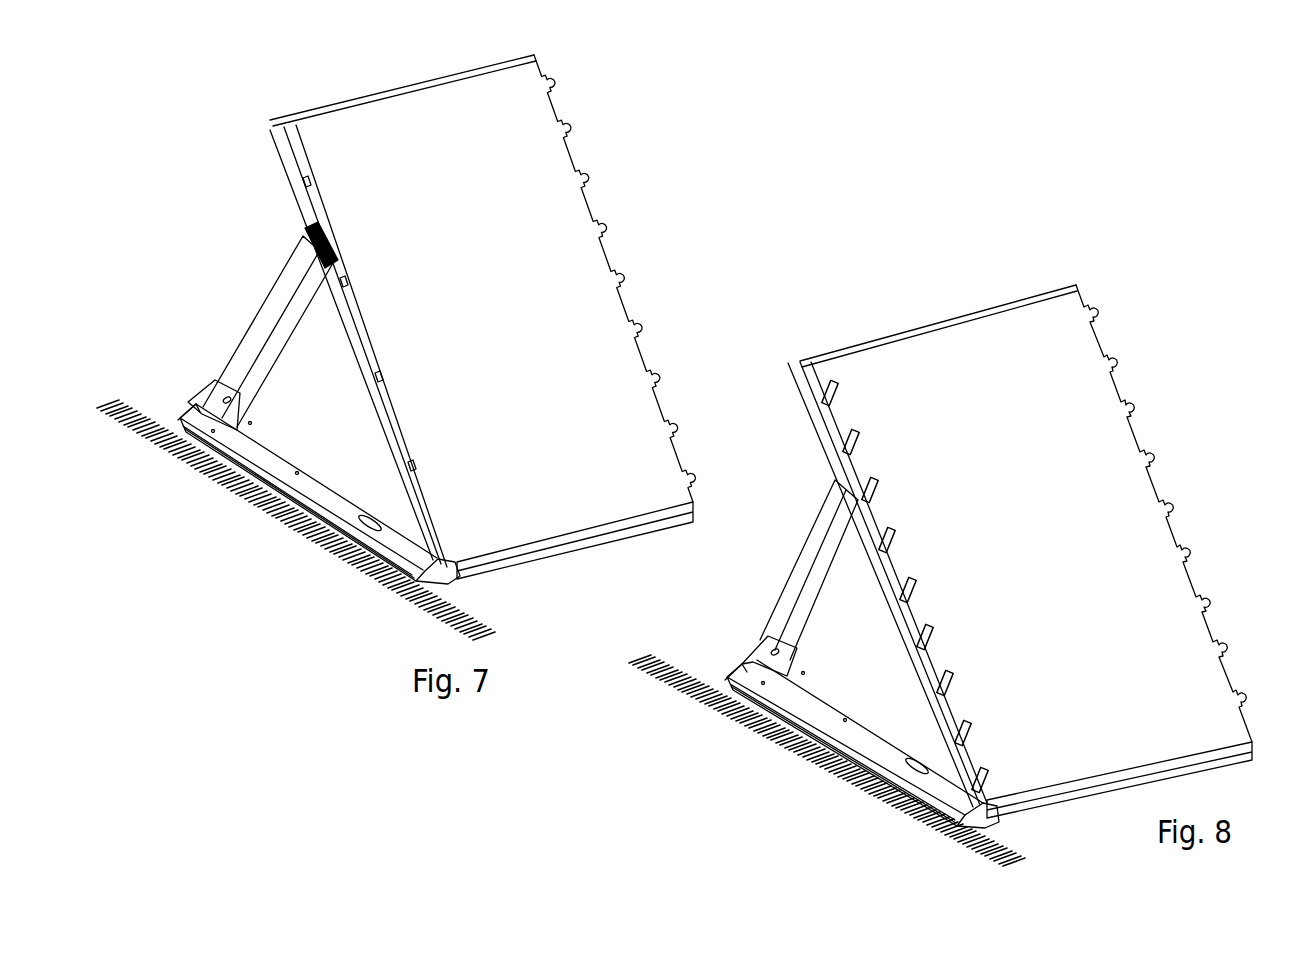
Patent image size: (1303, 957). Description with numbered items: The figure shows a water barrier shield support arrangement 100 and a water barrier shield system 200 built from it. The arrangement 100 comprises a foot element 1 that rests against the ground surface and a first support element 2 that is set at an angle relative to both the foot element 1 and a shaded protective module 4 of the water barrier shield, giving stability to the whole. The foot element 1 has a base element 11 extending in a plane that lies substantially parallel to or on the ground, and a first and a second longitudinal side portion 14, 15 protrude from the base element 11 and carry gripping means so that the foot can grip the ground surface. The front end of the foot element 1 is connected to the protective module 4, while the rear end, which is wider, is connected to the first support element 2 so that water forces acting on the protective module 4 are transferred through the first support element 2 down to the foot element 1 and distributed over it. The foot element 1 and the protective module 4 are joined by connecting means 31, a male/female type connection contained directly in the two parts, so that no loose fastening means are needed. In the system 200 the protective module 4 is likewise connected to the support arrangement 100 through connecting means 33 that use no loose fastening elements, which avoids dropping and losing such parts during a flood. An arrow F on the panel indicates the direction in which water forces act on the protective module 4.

In FIG. 7, the water barrier shield support arrangement 100 is at (221, 166).
In FIG. 8, the water barrier shield system 200 is at (1135, 266).
In FIG. 7, the foot element 1 is at (272, 458).
In FIG. 8, the foot element 1 is at (733, 662).
In FIG. 7, the first support element 2 is at (282, 279).
In FIG. 8, the first support element 2 is at (830, 487).
In FIG. 7, the protective module 4 is at (483, 317).
In FIG. 8, the protective module 4 is at (1110, 433).
In FIG. 7, the base element 11 is at (320, 482).
In FIG. 8, the base element 11 is at (870, 735).
In FIG. 7, the first longitudinal side portion 14 is at (327, 458).
In FIG. 8, the first longitudinal side portion 14 is at (866, 705).
In FIG. 7, the second longitudinal side portion 15 is at (180, 425).
In FIG. 8, the second longitudinal side portion 15 is at (732, 697).
In FIG. 7, the connecting means 31 is at (402, 571).
In FIG. 8, the connecting means 31 is at (945, 808).
In FIG. 8, the connecting means 33 is at (857, 500).
In FIG. 7, the force direction F is at (527, 287).